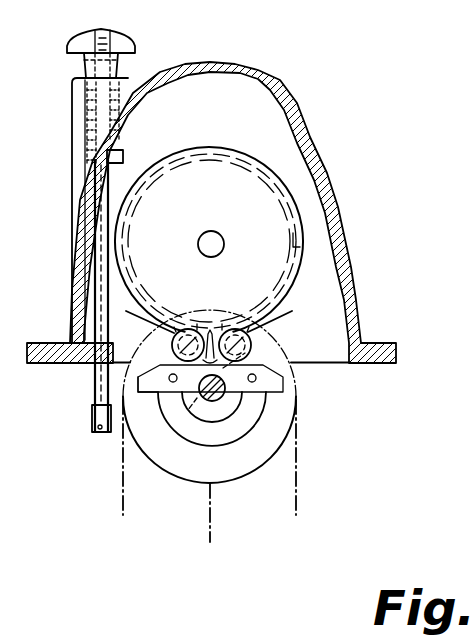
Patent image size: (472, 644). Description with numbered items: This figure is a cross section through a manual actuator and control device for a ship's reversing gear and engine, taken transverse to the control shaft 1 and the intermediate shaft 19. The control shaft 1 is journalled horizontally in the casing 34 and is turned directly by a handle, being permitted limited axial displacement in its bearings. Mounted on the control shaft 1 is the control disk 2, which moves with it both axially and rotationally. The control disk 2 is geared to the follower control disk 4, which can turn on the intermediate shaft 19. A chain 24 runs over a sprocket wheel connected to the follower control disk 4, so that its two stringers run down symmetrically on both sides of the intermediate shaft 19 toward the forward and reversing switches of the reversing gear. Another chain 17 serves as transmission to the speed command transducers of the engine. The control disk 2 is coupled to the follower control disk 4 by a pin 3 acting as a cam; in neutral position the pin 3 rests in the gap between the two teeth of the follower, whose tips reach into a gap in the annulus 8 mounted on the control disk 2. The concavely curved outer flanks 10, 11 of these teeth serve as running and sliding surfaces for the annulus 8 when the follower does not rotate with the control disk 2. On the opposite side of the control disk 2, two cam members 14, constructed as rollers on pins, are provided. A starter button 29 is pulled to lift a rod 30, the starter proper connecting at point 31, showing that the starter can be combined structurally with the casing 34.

The control shaft 1 is at (224, 243).
The control disk 2 is at (267, 167).
The pin 3 is at (207, 350).
The follower control disk 4 is at (253, 429).
The annulus 8 is at (300, 247).
The outer flank 10 is at (286, 373).
The outer flank 11 is at (133, 373).
The cam members 14 is at (143, 328).
The chain 17 is at (212, 528).
The intermediate shaft 19 is at (227, 395).
The chain 24 is at (121, 489).
The starter button 29 is at (83, 42).
The rod 30 is at (95, 225).
The point 31 is at (95, 425).
The casing 34 is at (290, 98).